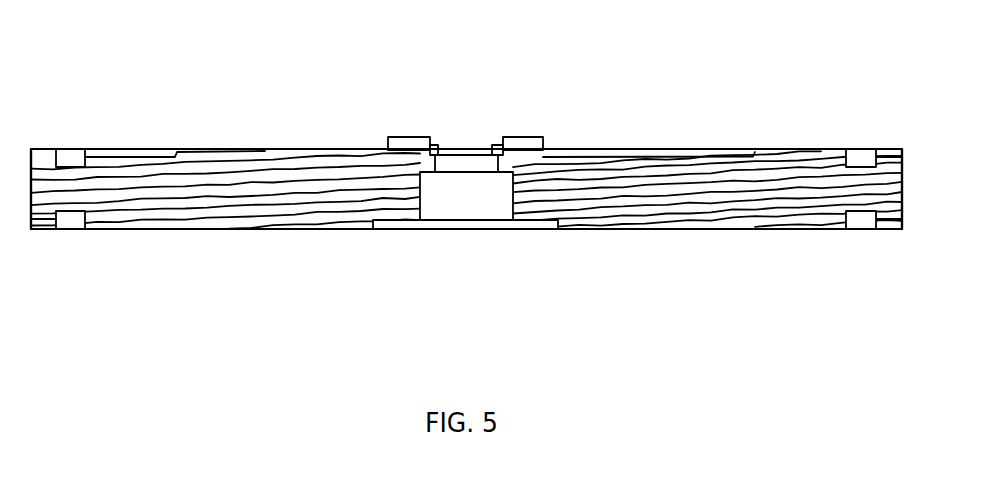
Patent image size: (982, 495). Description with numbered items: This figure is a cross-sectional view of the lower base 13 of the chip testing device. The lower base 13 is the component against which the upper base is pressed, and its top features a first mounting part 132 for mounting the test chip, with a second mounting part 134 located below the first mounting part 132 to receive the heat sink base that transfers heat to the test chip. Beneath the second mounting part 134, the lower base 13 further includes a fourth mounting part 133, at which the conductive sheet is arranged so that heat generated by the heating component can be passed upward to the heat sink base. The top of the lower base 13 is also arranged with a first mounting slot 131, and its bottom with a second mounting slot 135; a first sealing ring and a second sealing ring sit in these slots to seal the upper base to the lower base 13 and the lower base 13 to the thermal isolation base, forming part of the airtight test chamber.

The lower base 13 is at (44, 42).
The first mounting slot 131 is at (70, 157).
The first mounting part 132 is at (418, 150).
The fourth mounting part 133 is at (495, 225).
The second mounting part 134 is at (435, 210).
The second mounting slot 135 is at (65, 223).